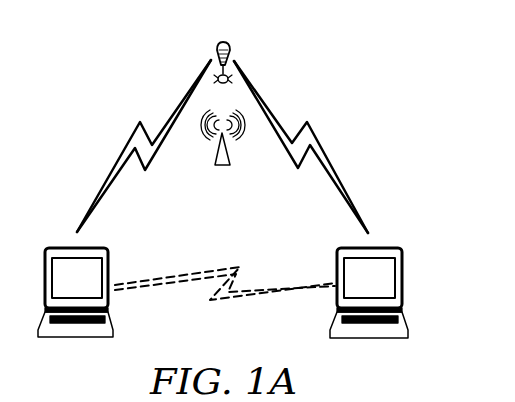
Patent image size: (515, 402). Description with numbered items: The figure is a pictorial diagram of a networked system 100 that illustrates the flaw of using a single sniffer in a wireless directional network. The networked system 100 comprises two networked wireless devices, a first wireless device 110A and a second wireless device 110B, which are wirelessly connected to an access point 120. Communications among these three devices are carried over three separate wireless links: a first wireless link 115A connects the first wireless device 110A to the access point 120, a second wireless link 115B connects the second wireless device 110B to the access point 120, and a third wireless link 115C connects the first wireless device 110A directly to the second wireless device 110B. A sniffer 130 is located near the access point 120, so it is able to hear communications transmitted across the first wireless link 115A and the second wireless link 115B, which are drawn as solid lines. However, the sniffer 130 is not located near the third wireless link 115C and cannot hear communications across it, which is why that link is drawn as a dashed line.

The networked system 100 is at (408, 50).
The first wireless device 110A is at (94, 248).
The second wireless device 110B is at (383, 248).
The first wireless link 115A is at (138, 124).
The second wireless link 115B is at (318, 138).
The third wireless link 115C is at (212, 300).
The access point 120 is at (227, 41).
The sniffer 130 is at (231, 113).